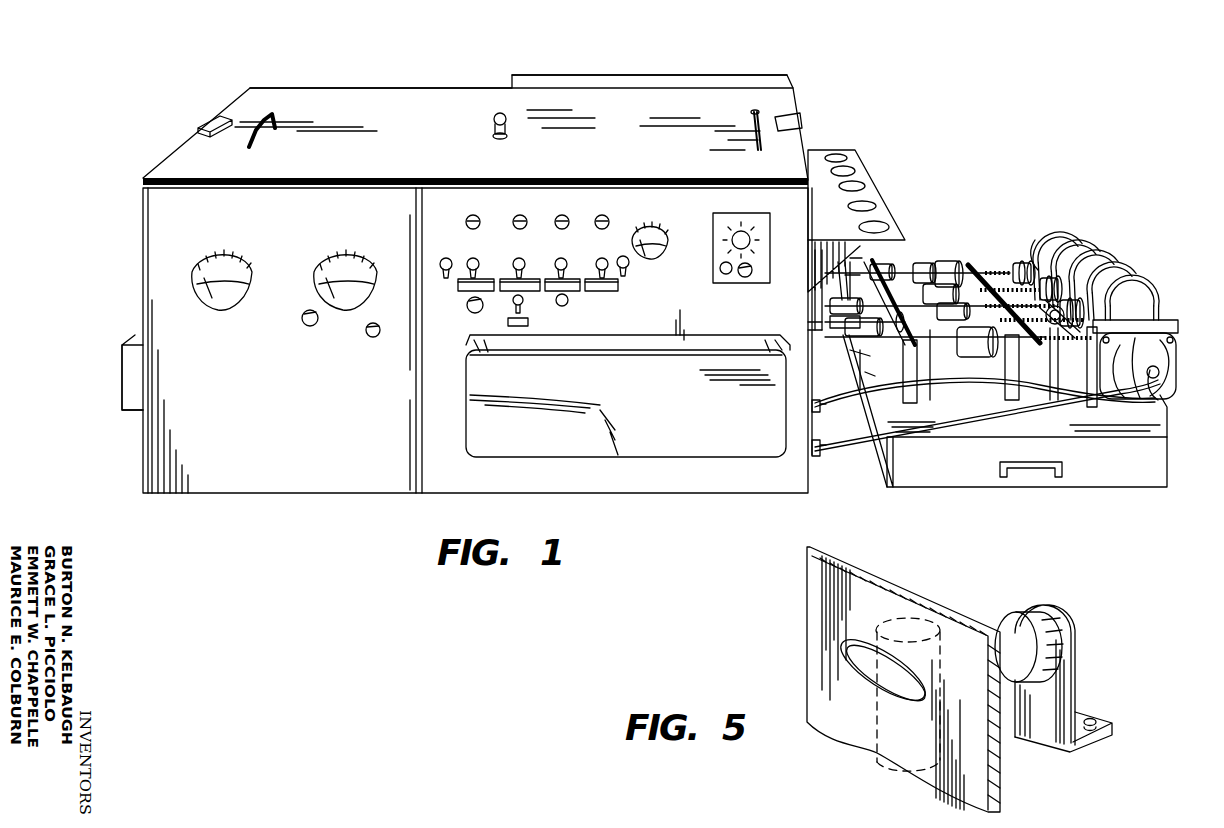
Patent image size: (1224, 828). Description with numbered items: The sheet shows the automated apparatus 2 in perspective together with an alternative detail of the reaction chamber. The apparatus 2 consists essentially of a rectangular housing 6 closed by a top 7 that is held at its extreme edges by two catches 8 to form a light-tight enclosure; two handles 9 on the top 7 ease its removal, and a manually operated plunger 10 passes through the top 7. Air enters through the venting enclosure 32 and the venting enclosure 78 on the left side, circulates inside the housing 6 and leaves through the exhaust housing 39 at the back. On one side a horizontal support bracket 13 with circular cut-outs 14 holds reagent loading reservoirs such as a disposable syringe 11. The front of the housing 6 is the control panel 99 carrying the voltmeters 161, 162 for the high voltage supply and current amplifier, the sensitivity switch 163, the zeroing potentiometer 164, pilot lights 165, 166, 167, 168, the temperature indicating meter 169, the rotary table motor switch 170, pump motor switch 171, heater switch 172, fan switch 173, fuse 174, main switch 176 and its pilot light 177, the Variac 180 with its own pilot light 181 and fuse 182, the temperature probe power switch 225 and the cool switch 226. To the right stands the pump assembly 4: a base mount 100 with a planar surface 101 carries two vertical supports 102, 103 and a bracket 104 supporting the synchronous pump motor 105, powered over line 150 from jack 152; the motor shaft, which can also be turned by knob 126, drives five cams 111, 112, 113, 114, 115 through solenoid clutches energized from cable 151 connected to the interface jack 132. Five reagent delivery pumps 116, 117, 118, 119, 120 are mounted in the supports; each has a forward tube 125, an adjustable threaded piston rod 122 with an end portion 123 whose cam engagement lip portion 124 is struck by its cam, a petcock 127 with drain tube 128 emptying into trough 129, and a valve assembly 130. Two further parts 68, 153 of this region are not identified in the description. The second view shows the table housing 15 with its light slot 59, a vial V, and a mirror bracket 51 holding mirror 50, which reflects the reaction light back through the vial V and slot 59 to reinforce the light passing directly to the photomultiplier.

In FIG. 1, the automated apparatus 2 is at (130, 326).
In FIG. 1, the pump assembly 4 is at (1186, 361).
In FIG. 1, the rectangular housing 6 is at (138, 383).
In FIG. 1, the top 7 is at (330, 100).
In FIG. 1, the catches 8 is at (216, 120).
In FIG. 1, the handles 9 is at (270, 114).
In FIG. 1, the manually operated plunger 10 is at (495, 127).
In FIG. 1, the plastic disposable syringe 11 is at (877, 255).
In FIG. 1, the horizontal support bracket 13 is at (870, 186).
In FIG. 1, the circular cut-outs 14 is at (840, 235).
In FIG. 5, the table housing 15 is at (848, 612).
In FIG. 1, the venting enclosure 32 is at (466, 396).
In FIG. 1, the exhaust housing 39 is at (668, 78).
In FIG. 5, the mirror 50 is at (1030, 640).
In FIG. 5, the mirror bracket 51 is at (1076, 683).
In FIG. 5, the light slot 59 is at (852, 676).
In FIG. 5, the vial V is at (878, 732).
In FIG. 1, the wall 68 is at (806, 320).
In FIG. 1, the venting enclosure 78 is at (122, 360).
In FIG. 1, the control panel 99 is at (335, 485).
In FIG. 1, the base mount 100 is at (1168, 462).
In FIG. 1, the planar surface 101 is at (1165, 433).
In FIG. 1, the vertical support 102 is at (990, 256).
In FIG. 1, the vertical support 103 is at (886, 268).
In FIG. 1, the bracket 104 is at (1160, 320).
In FIG. 1, the synchronous pump motor 105 is at (1168, 360).
In FIG. 1, the cam 111 is at (1144, 300).
In FIG. 1, the cam 112 is at (1128, 288).
In FIG. 1, the cam 113 is at (1108, 275).
In FIG. 1, the cam 114 is at (1088, 258).
In FIG. 1, the cam 115 is at (1068, 236).
In FIG. 1, the reagent delivery pump 116 is at (972, 378).
In FIG. 1, the reagent delivery pump 117 is at (944, 358).
In FIG. 1, the reagent delivery pump 118 is at (908, 262).
In FIG. 1, the reagent delivery pump 119 is at (986, 268).
In FIG. 1, the reagent delivery pump 120 is at (938, 268).
In FIG. 1, the threaded piston rod 122 is at (1060, 388).
In FIG. 1, the end portion 123 is at (1108, 322).
In FIG. 1, the cam engagement lip portion 124 is at (1062, 398).
In FIG. 1, the forward tube 125 is at (946, 338).
In FIG. 1, the knob 126 is at (1048, 242).
In FIG. 1, the petcock 127 is at (842, 292).
In FIG. 1, the drain tube 128 is at (882, 330).
In FIG. 1, the trough 129 is at (870, 362).
In FIG. 1, the valve assembly 130 is at (805, 358).
In FIG. 1, the microswitch solenoid interface jack 132 is at (822, 409).
In FIG. 1, the line 150 is at (1158, 388).
In FIG. 1, the cable 151 is at (948, 378).
In FIG. 1, the jack 152 is at (816, 456).
In FIG. 1, the bracket 153 is at (882, 262).
In FIG. 1, the voltmeter 161 is at (236, 258).
In FIG. 1, the voltmeter 162 is at (332, 258).
In FIG. 1, the switch 163 is at (308, 326).
In FIG. 1, the potentiometer 164 is at (372, 337).
In FIG. 1, the pilot light 165 is at (472, 215).
In FIG. 1, the pilot light 166 is at (520, 215).
In FIG. 1, the pilot light 167 is at (562, 215).
In FIG. 1, the pilot light 168 is at (609, 198).
In FIG. 1, the temperature indicating meter 169 is at (640, 217).
In FIG. 1, the rotary table motor switch 170 is at (472, 257).
In FIG. 1, the pump motor switch 171 is at (518, 257).
In FIG. 1, the heater switch 172 is at (561, 257).
In FIG. 1, the fan switch 173 is at (602, 257).
In FIG. 1, the fuse 174 is at (472, 311).
In FIG. 1, the main switch 176 is at (522, 305).
In FIG. 1, the pilot light 177 is at (570, 300).
In FIG. 1, the Variac 180 is at (742, 226).
In FIG. 1, the pilot light 181 is at (727, 278).
In FIG. 1, the fuse 182 is at (746, 280).
In FIG. 1, the temperature probe power switch 225 is at (446, 271).
In FIG. 1, the cool switch 226 is at (628, 262).